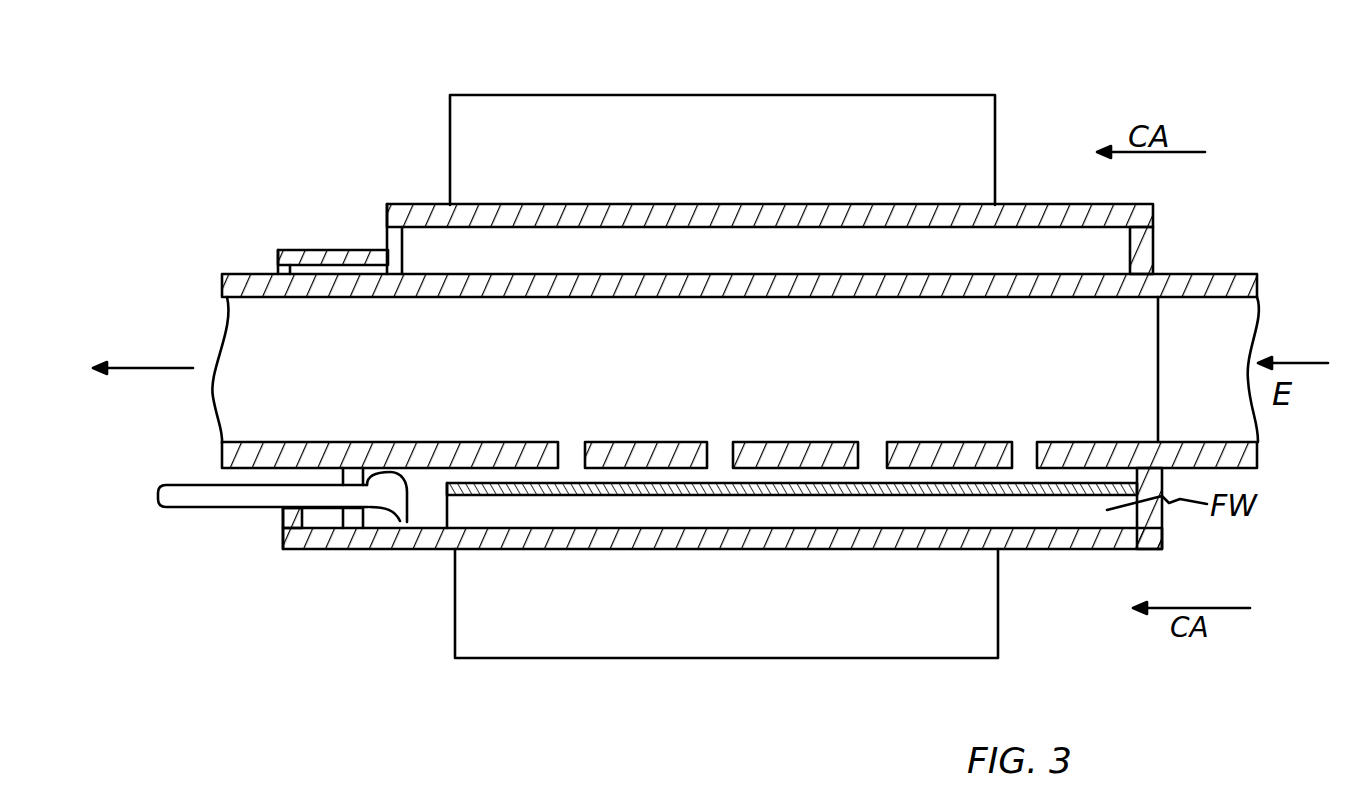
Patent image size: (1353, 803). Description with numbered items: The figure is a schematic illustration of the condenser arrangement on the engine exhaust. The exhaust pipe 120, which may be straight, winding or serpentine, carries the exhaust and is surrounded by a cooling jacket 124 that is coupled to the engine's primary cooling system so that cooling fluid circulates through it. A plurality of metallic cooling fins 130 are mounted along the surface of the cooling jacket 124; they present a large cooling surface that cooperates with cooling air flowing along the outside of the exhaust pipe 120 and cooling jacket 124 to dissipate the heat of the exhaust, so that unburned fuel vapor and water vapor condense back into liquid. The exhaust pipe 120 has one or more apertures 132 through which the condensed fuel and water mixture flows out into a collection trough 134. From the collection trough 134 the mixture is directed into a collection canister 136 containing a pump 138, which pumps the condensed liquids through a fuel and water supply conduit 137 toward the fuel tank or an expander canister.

The exhaust pipe 120 is at (1170, 272).
The cooling jacket 124 is at (1157, 218).
The cooling fins 130 is at (982, 136).
The apertures 132 is at (568, 442).
The collection trough 134 is at (845, 512).
The collection canister 136 is at (423, 510).
The fuel and water supply conduit 137 is at (203, 498).
The pump 138 is at (365, 550).